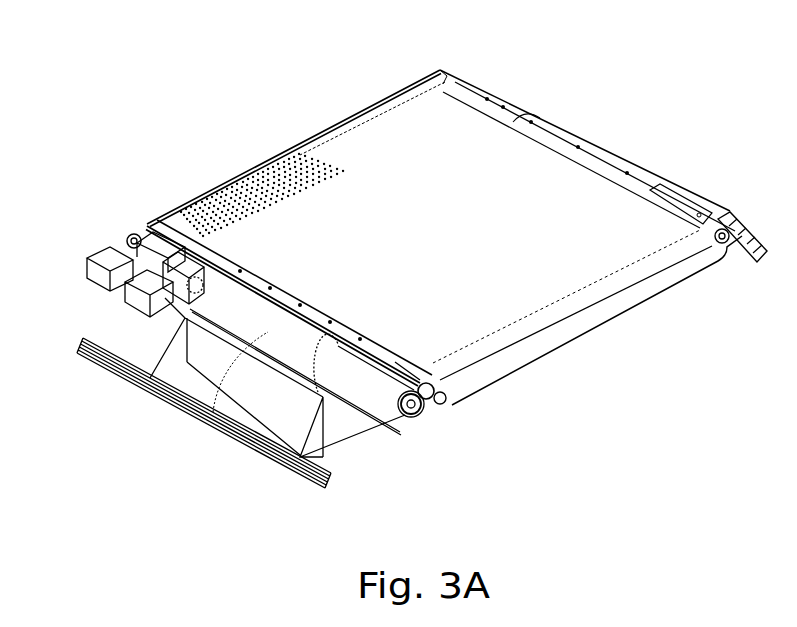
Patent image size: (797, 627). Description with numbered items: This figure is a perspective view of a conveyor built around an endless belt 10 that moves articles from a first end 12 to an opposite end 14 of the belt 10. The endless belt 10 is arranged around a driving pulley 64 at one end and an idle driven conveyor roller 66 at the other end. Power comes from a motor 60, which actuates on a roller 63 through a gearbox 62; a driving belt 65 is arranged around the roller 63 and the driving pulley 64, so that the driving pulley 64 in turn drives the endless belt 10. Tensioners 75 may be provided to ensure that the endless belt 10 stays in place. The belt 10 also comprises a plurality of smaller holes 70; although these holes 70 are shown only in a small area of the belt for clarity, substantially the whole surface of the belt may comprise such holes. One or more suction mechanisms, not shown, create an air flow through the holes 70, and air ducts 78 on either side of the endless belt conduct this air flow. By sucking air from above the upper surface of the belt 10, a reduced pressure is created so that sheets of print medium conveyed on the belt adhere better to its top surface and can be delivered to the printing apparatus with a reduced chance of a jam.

The belt 10 is at (455, 102).
The first end 12 is at (386, 97).
The opposite end 14 is at (662, 283).
The motor 60 is at (106, 285).
The gearbox 62 is at (116, 298).
The roller 63 is at (151, 318).
The driving pulley 64 is at (130, 236).
The driving belt 65 is at (147, 233).
The idle driven conveyor roller 66 is at (455, 405).
The holes 70 is at (262, 172).
The tensioners 75 is at (367, 394).
The air ducts 78 is at (204, 420).